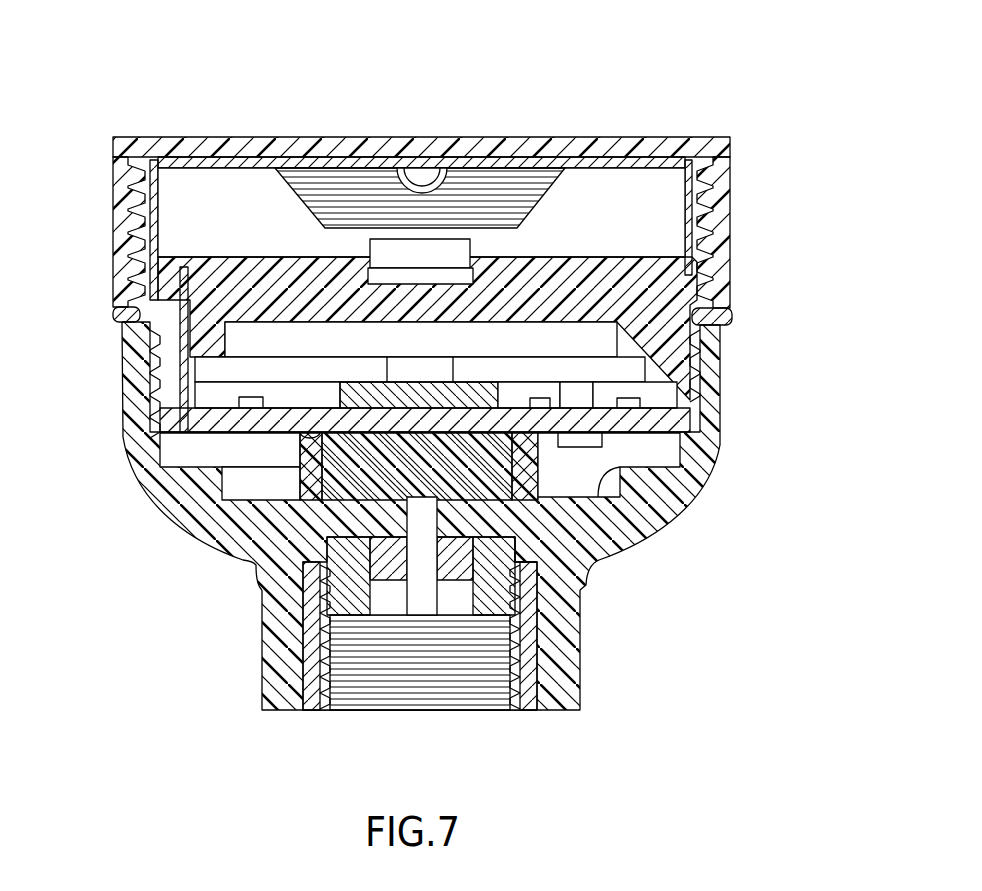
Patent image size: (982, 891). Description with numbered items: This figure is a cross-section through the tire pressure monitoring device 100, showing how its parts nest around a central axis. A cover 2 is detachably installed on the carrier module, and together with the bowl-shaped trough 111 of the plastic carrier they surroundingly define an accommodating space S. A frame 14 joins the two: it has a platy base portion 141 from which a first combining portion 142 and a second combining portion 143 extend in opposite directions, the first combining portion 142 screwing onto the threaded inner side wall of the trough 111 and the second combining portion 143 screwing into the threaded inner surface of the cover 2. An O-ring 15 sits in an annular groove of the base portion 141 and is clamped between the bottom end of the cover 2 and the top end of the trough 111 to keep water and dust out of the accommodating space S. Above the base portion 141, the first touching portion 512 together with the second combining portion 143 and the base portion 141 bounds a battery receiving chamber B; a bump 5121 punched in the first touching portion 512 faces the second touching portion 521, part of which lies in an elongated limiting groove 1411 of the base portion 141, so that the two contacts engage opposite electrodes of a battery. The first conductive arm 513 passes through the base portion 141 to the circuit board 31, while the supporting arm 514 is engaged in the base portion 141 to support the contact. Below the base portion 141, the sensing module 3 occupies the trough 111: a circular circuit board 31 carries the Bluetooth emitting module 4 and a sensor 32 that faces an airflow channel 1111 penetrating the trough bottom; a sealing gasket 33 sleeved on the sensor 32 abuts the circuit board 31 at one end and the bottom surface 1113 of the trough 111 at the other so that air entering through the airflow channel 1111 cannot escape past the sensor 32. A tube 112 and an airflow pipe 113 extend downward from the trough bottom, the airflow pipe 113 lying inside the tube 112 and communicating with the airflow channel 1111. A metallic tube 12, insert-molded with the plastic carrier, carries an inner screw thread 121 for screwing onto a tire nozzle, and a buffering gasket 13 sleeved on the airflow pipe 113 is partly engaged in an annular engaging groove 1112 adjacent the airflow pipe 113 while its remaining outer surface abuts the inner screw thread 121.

The tire pressure monitoring device 100 is at (151, 50).
The cover 2 is at (418, 183).
The battery receiving chamber B is at (219, 190).
The first touching portion 512 is at (333, 152).
The bump 5121 is at (425, 163).
The second touching portion 521 is at (455, 248).
The supporting arm 514 is at (688, 200).
The first conductive arm 513 is at (155, 222).
The second combining portion 143 is at (700, 220).
The base portion 141 is at (647, 302).
The frame 14 is at (503, 307).
The first combining portion 142 is at (690, 365).
The limiting groove 1411 is at (417, 286).
The Bluetooth emitting module 4 is at (482, 380).
The O-ring 15 is at (108, 328).
The trough 111 is at (708, 398).
The accommodating space S is at (662, 449).
The bottom surface 1113 is at (605, 488).
The engaging groove 1112 is at (524, 551).
The tube 112 is at (560, 653).
The metallic tube 12 is at (530, 716).
The buffering gasket 13 is at (503, 619).
The airflow pipe 113 is at (458, 582).
The airflow channel 1111 is at (417, 546).
The inner screw thread 121 is at (363, 692).
The sensing module 3 is at (293, 416).
The circuit board 31 is at (170, 438).
The sealing gasket 33 is at (227, 483).
The sensor 32 is at (227, 553).